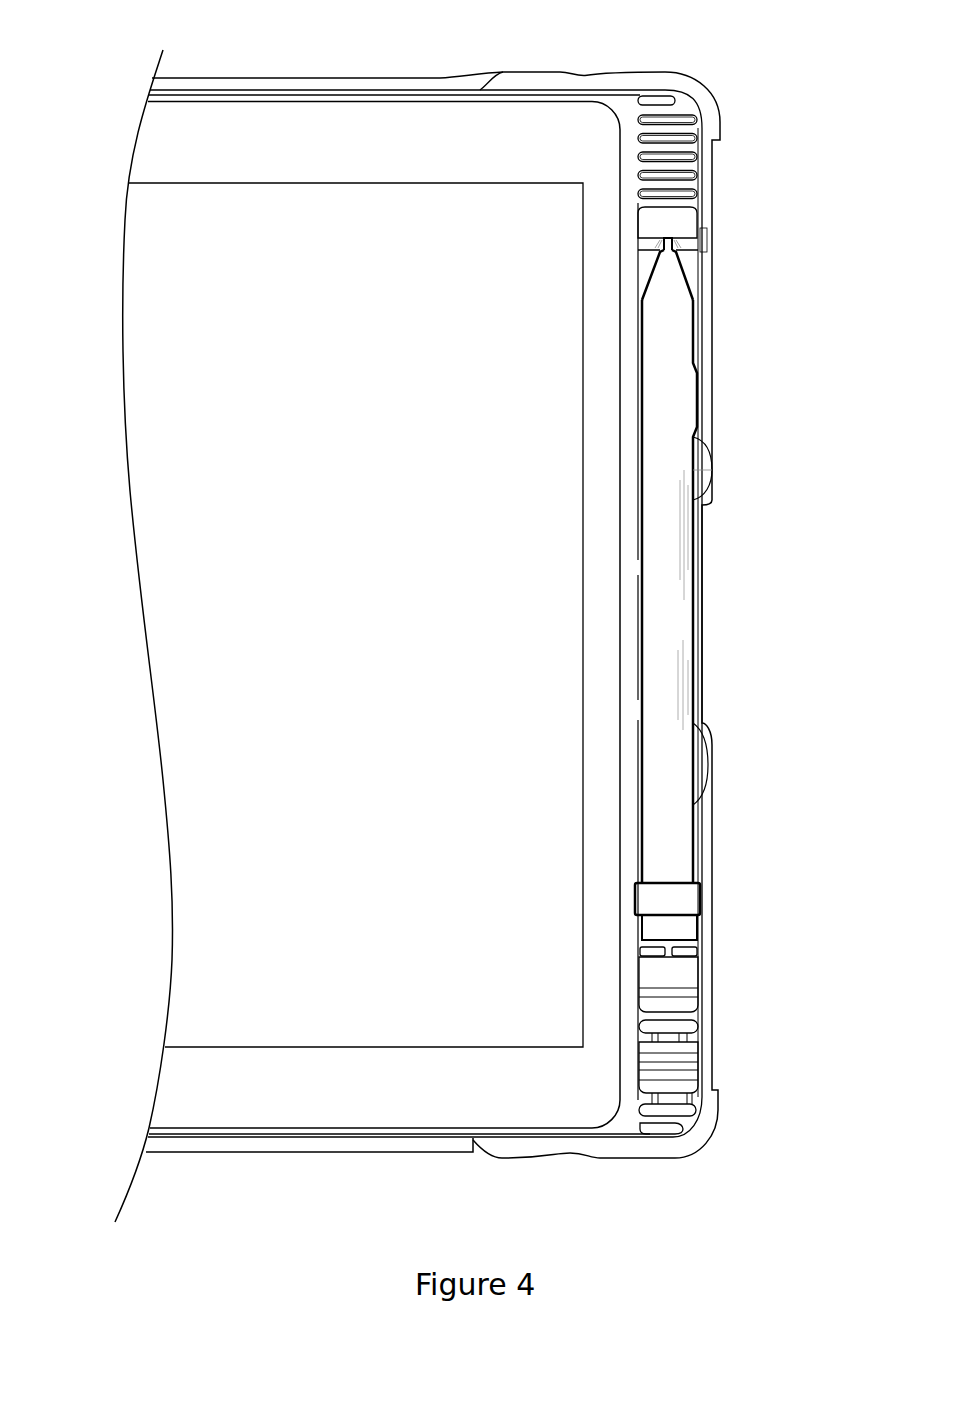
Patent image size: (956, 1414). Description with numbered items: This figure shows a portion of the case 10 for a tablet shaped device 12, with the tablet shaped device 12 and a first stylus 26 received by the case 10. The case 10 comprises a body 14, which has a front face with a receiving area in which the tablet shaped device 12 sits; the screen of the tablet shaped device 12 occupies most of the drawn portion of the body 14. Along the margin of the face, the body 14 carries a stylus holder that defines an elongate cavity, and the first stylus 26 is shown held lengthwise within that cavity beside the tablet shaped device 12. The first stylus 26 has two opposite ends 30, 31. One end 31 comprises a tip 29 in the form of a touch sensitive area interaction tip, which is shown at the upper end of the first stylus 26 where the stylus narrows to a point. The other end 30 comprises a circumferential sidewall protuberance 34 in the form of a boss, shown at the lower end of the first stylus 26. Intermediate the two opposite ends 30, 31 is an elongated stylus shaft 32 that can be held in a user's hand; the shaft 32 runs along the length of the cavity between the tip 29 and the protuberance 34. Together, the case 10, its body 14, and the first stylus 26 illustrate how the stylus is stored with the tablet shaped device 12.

The case 10 is at (130, 932).
The tablet shaped device 12 is at (338, 247).
The body 14 is at (278, 1152).
The first stylus 26 is at (747, 550).
The tip 29 is at (667, 236).
The end 30 is at (683, 932).
The end 31 is at (665, 294).
The elongated stylus shaft 32 is at (675, 617).
The circumferential sidewall protuberance 34 is at (690, 900).